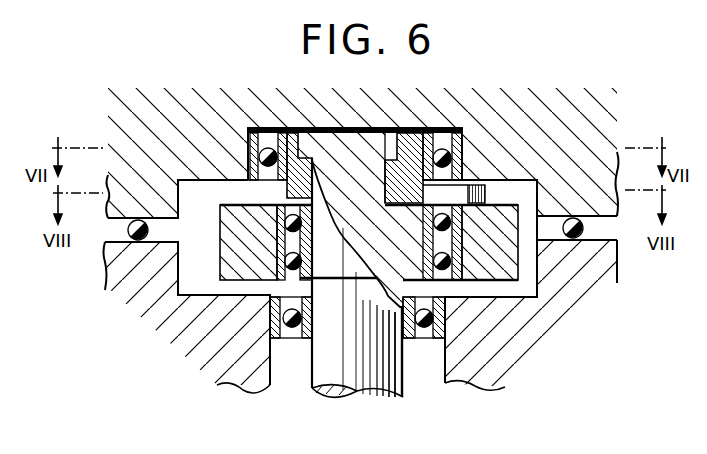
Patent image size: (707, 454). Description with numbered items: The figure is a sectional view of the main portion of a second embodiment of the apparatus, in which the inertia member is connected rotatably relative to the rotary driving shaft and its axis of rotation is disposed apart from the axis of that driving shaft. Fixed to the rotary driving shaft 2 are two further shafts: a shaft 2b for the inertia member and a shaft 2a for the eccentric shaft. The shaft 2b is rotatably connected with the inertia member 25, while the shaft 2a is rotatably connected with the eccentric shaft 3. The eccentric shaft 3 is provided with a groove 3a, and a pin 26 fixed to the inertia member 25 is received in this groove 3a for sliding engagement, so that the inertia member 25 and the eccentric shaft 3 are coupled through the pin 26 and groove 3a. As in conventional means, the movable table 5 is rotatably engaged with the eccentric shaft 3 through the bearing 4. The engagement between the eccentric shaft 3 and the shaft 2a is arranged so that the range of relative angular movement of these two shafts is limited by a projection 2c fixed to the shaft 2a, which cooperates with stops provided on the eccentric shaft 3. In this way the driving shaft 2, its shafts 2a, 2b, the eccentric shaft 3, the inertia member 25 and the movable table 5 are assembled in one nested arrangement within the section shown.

The rotary driving shaft 2 is at (394, 372).
The shaft for the eccentric shaft 2a is at (358, 152).
The shaft for the inertia member 2b is at (415, 282).
The projection 2c is at (322, 140).
The eccentric shaft 3 is at (298, 135).
The groove 3a is at (450, 190).
The bearing 4 is at (250, 158).
The movable table 5 is at (515, 127).
The inertia member 25 is at (508, 262).
The pin 26 is at (500, 187).